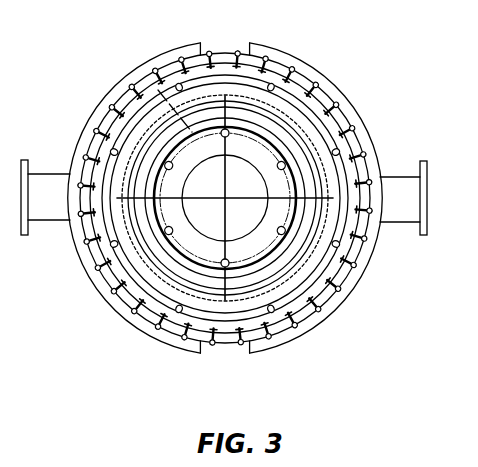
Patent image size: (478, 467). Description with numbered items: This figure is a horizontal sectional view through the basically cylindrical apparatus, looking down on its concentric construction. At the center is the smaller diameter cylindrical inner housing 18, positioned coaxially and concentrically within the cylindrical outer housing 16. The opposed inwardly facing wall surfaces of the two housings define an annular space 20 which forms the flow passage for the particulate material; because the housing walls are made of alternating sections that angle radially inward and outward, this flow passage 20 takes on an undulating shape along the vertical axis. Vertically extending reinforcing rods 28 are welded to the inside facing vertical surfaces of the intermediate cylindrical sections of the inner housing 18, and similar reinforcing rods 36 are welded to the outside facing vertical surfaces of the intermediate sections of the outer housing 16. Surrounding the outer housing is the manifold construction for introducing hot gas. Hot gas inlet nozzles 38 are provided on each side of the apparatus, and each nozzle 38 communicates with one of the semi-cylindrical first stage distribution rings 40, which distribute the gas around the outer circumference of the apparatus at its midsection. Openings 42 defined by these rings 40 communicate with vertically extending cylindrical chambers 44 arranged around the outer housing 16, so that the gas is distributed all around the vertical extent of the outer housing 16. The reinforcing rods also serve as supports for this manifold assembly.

The cylindrical outer housing 16 is at (128, 140).
The cylindrical inner housing 18 is at (145, 73).
The annular space 20 is at (270, 262).
The reinforcing rods 28 is at (289, 183).
The reinforcing rods 36 is at (275, 305).
The hot gas inlet nozzles 38 is at (57, 210).
The first stage distribution rings 40 is at (88, 268).
The openings 42 is at (315, 90).
The cylindrical chambers 44 is at (280, 77).